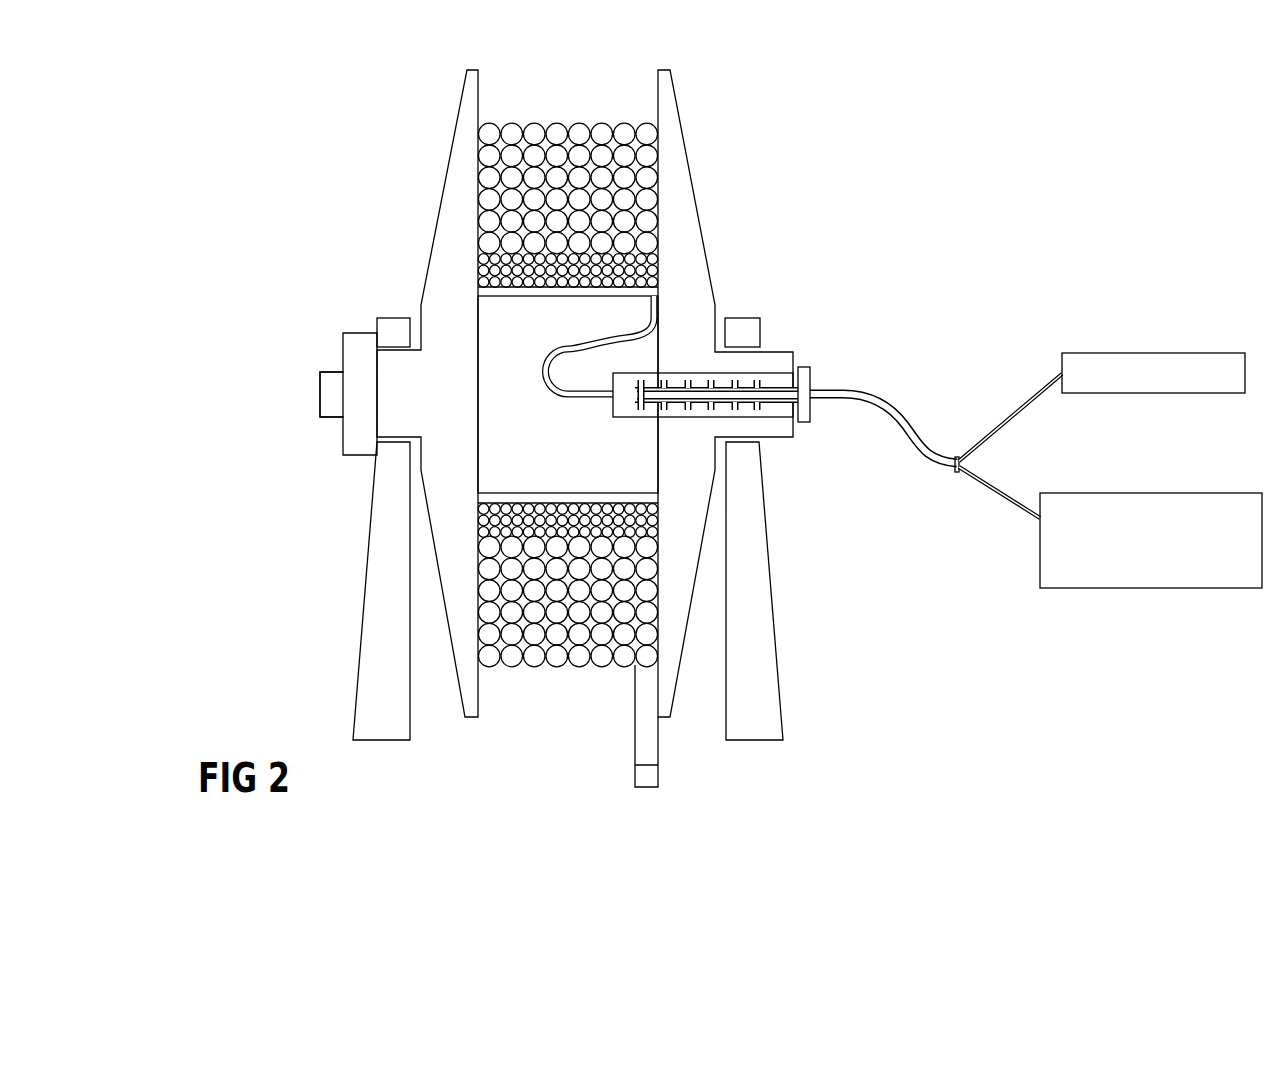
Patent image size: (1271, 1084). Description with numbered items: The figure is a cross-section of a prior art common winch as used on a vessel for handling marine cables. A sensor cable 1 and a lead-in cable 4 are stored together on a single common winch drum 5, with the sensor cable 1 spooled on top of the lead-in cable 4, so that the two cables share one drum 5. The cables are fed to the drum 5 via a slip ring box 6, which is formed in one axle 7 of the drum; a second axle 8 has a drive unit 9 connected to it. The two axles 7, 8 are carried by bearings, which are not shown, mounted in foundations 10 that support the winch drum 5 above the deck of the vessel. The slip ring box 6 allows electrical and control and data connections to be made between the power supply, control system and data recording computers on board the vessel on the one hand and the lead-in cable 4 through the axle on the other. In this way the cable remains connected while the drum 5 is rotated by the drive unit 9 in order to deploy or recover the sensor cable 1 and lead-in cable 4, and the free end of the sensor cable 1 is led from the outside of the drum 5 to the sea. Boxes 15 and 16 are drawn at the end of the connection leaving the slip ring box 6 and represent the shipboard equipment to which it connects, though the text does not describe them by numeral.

The sensor cable 1 is at (645, 155).
The lead-in cable 4 is at (645, 276).
The common winch drum 5 is at (436, 221).
The slip ring box 6 is at (813, 368).
The axle 7 is at (403, 413).
The axle 8 is at (771, 428).
The drive unit 9 is at (318, 399).
The foundations 10 is at (356, 681).
The power supply 15 is at (1143, 353).
The controller 16 is at (1155, 493).